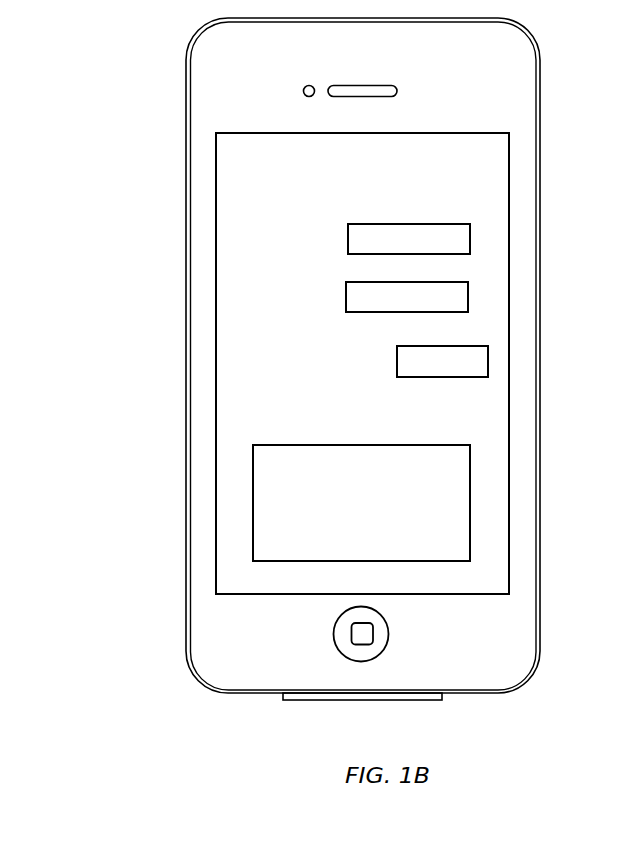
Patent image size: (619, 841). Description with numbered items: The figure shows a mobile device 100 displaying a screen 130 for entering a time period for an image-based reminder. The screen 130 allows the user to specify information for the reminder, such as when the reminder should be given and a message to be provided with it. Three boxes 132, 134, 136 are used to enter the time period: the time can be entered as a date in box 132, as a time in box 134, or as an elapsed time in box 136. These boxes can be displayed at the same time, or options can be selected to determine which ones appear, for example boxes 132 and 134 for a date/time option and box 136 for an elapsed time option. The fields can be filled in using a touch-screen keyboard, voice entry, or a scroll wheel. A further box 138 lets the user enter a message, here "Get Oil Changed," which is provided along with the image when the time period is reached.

The mobile device 100 is at (125, 157).
The screen 130 is at (485, 187).
The box 132 is at (470, 239).
The box 134 is at (468, 297).
The box 136 is at (488, 362).
The box 138 is at (470, 503).